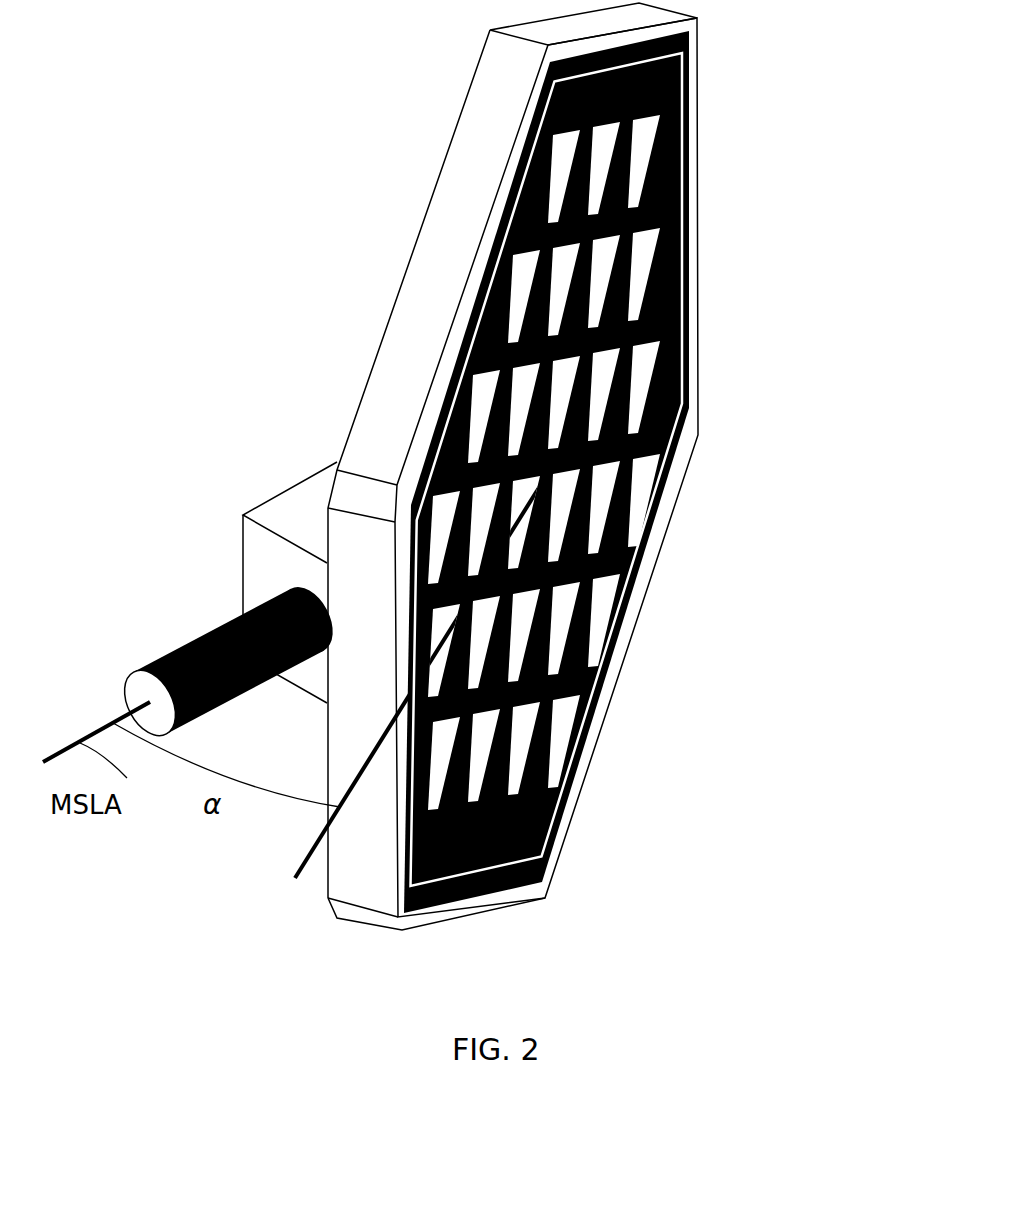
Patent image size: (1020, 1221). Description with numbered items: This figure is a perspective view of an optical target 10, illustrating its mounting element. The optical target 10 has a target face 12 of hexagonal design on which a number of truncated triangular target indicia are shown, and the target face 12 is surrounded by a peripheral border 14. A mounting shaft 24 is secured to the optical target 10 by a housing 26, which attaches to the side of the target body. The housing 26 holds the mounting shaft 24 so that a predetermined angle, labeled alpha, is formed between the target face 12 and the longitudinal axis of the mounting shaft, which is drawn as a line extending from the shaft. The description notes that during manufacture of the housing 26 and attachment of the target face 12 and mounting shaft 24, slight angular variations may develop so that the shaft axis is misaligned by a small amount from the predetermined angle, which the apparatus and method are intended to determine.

The optical target 10 is at (705, 195).
The target face 12 is at (563, 823).
The peripheral border 14 is at (530, 865).
The mounting shaft 24 is at (243, 603).
The housing 26 is at (288, 518).